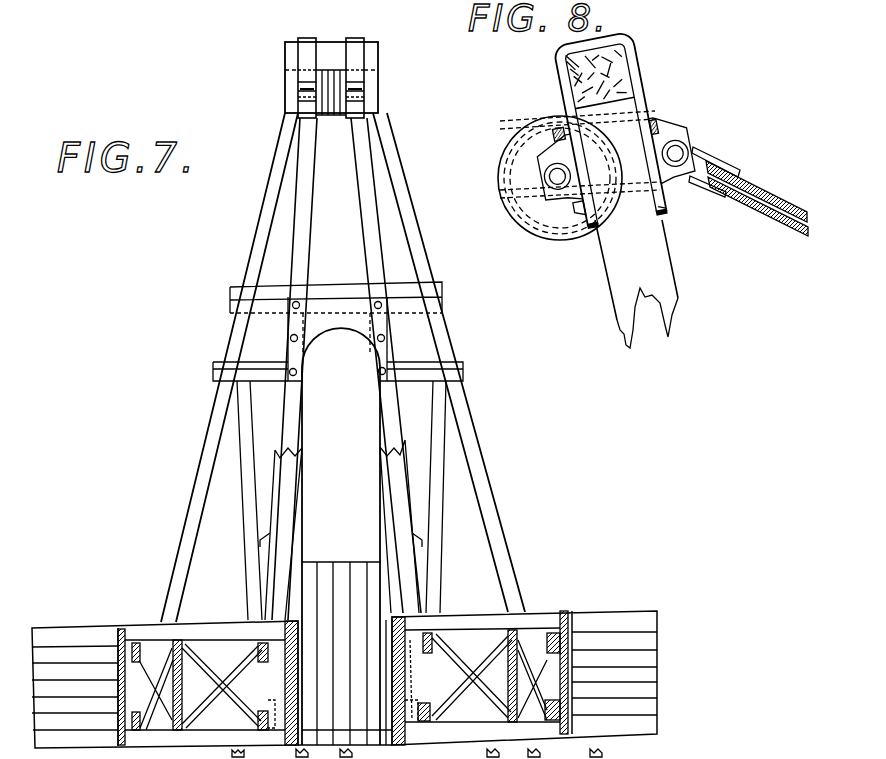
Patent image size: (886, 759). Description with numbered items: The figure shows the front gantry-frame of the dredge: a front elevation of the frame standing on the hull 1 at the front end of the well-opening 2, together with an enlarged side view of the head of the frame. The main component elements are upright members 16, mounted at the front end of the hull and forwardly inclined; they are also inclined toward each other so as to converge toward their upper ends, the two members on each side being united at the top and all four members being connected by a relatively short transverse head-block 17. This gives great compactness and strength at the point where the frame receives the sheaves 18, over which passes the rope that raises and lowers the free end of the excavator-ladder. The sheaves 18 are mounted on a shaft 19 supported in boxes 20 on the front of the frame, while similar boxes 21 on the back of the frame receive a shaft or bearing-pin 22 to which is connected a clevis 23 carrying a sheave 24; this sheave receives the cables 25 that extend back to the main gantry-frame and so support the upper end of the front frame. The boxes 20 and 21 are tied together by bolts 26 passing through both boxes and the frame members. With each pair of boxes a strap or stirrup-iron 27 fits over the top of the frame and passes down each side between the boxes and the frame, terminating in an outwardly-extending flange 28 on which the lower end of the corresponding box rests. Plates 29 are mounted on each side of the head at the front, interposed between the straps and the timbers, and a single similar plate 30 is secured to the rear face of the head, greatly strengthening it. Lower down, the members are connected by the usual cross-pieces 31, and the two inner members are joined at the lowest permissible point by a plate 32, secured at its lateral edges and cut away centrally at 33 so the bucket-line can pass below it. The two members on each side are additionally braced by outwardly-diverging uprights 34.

In FIG. 7, the hull 1 is at (648, 720).
In FIG. 7, the well-opening 2 is at (345, 653).
In FIG. 7, the upright members 16 is at (378, 416).
In FIG. 8, the upright members 16 is at (607, 290).
In FIG. 8, the head-block 17 is at (617, 62).
In FIG. 7, the sheaves 18 is at (337, 118).
In FIG. 8, the sheaves 18 is at (511, 208).
In FIG. 8, the shaft 19 is at (556, 174).
In FIG. 7, the boxes 20 is at (304, 91).
In FIG. 8, the boxes 20 is at (560, 206).
In FIG. 8, the boxes 21 is at (666, 120).
In FIG. 8, the bearing-pin 22 is at (679, 150).
In FIG. 8, the clevis 23 is at (710, 155).
In FIG. 8, the sheave 24 is at (745, 181).
In FIG. 8, the cables 25 is at (776, 204).
In FIG. 8, the bolts 26 is at (684, 194).
In FIG. 7, the stirrup-iron 27 is at (300, 40).
In FIG. 8, the stirrup-iron 27 is at (557, 86).
In FIG. 8, the flange 28 is at (578, 233).
In FIG. 7, the plates 29 is at (290, 83).
In FIG. 8, the plates 29 is at (594, 236).
In FIG. 8, the plate 30 is at (665, 213).
In FIG. 7, the cross-pieces 31 is at (270, 382).
In FIG. 7, the plate 32 is at (326, 305).
In FIG. 7, the cut-away portion 33 is at (344, 344).
In FIG. 7, the outwardly-diverging uprights 34 is at (240, 490).